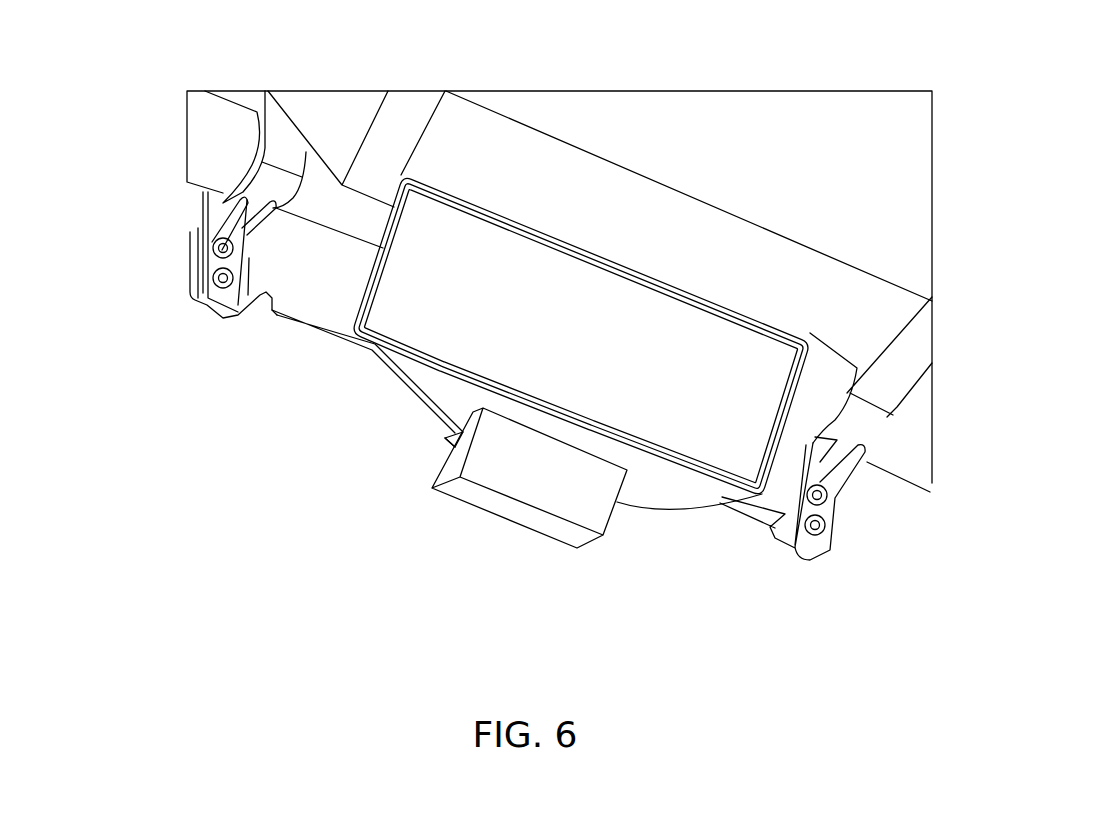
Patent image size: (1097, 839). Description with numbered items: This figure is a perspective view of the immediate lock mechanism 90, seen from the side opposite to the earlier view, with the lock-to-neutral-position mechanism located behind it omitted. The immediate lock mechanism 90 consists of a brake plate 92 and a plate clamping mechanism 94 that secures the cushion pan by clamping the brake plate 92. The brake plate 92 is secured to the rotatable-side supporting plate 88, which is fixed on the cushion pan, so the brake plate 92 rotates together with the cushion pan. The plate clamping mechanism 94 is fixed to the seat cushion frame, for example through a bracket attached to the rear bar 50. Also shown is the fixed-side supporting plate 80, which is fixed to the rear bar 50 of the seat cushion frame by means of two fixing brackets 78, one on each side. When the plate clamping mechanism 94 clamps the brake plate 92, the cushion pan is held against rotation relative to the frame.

The rear bar 50 is at (225, 123).
The fixing bracket 78 is at (210, 206).
The fixed-side supporting plate 80 is at (318, 297).
The rotatable-side supporting plate 88 is at (472, 277).
The immediate lock mechanism 90 is at (405, 470).
The brake plate 92 is at (663, 490).
The plate clamping mechanism 94 is at (535, 488).